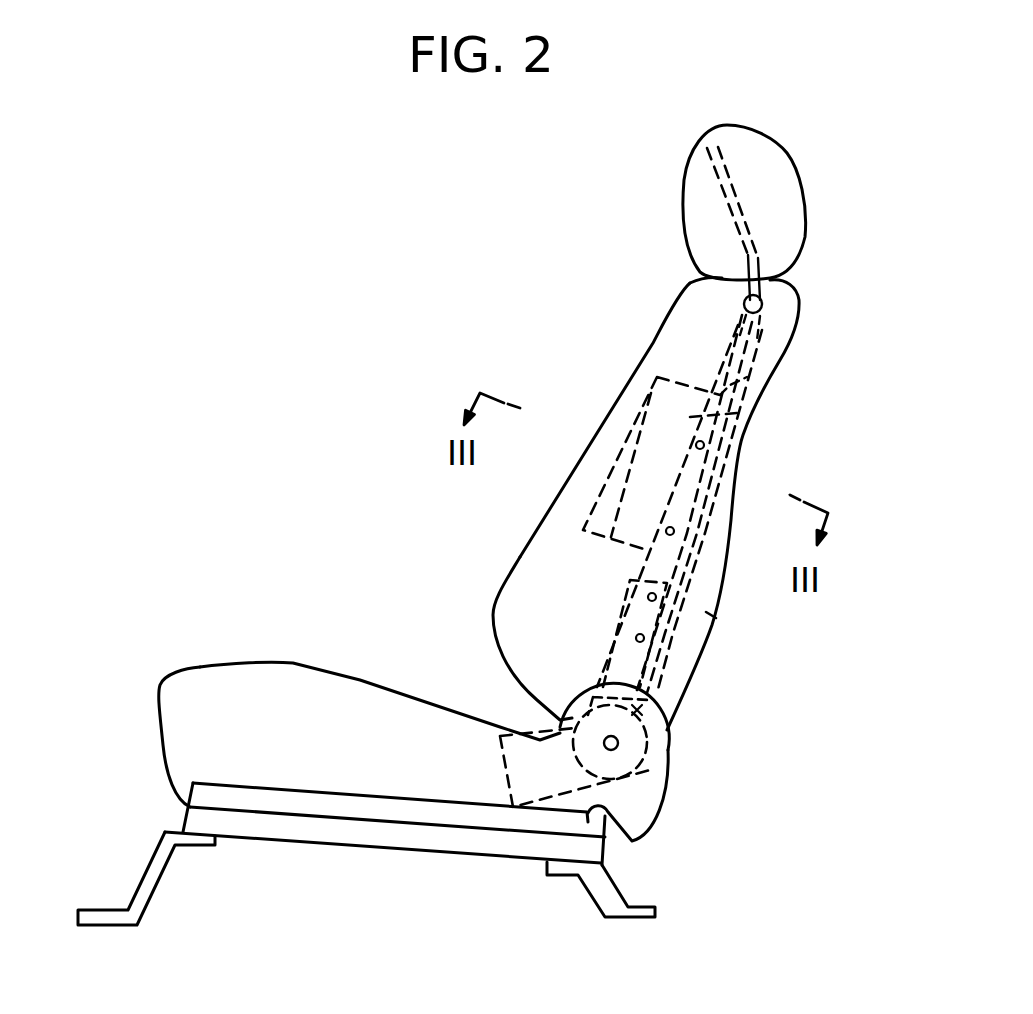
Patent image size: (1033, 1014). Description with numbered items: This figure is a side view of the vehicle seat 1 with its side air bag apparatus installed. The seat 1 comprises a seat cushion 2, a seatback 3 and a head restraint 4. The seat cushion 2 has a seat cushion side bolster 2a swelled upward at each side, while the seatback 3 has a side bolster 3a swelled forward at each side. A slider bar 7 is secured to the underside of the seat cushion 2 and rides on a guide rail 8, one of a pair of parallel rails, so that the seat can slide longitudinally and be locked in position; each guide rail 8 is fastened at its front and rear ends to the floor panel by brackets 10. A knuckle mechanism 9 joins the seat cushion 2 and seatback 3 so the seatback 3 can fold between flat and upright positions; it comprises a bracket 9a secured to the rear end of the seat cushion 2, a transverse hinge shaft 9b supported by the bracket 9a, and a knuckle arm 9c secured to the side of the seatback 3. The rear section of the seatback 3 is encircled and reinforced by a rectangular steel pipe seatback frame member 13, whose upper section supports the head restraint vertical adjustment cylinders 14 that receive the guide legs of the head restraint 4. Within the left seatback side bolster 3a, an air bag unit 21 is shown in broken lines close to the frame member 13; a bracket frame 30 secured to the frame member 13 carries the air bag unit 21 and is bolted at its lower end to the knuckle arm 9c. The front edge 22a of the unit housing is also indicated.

The seat 1 is at (385, 568).
The seat cushion 2 is at (163, 747).
The seat cushion side bolster 2a is at (278, 673).
The seatback 3 is at (650, 347).
The seatback side bolster 3a is at (537, 553).
The head restraint 4 is at (793, 170).
The slider bar 7 is at (620, 830).
The guide rail 8 is at (410, 845).
The knuckle mechanism 9 is at (650, 750).
The bracket 9a is at (500, 735).
The transverse hinge shaft 9b is at (615, 745).
The knuckle arm 9c is at (650, 697).
The bracket 10 is at (593, 900).
The seatback frame member 13 is at (747, 377).
The head restraint vertical adjustment cylinder 14 is at (767, 317).
The air bag unit 21 is at (747, 418).
The front edge 22a is at (627, 405).
The bracket frame 30 is at (714, 616).